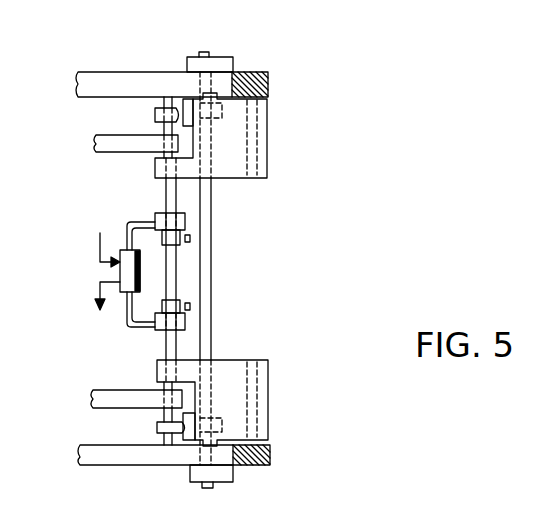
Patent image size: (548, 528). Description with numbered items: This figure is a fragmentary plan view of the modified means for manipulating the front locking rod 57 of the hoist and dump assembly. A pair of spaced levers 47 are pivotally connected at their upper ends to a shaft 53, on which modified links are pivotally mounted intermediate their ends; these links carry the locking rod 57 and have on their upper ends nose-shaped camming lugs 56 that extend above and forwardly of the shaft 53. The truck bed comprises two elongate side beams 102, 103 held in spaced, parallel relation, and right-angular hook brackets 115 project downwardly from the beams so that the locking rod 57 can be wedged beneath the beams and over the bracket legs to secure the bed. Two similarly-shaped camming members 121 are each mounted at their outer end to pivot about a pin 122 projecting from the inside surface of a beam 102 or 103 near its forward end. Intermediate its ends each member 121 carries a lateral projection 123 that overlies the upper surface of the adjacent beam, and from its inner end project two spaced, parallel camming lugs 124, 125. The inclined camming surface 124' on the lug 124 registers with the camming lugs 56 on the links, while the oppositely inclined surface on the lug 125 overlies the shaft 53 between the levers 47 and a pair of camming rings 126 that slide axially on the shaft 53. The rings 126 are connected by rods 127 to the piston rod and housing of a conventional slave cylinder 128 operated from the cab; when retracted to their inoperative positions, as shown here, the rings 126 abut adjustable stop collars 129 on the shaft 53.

The levers 47 is at (92, 144).
The shaft 53 is at (163, 185).
The camming lugs 56 is at (153, 110).
The locking rod 57 is at (205, 52).
The side beam 102 is at (92, 458).
The side beam 103 is at (90, 72).
The bracket 115 is at (231, 66).
The camming member 121 is at (268, 146).
The pin 122 is at (262, 119).
The lateral projection 123 is at (232, 73).
The camming lug 124 is at (243, 266).
The inclined camming surface 124' is at (157, 267).
The camming lug 125 is at (187, 178).
The camming ring 126 is at (153, 213).
The rod 127 is at (127, 228).
The slave cylinder 128 is at (118, 271).
The adjustable stop collar 129 is at (180, 303).